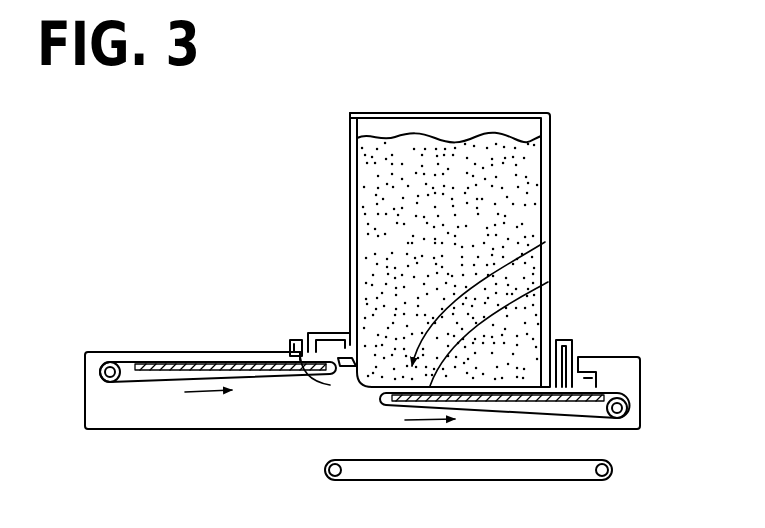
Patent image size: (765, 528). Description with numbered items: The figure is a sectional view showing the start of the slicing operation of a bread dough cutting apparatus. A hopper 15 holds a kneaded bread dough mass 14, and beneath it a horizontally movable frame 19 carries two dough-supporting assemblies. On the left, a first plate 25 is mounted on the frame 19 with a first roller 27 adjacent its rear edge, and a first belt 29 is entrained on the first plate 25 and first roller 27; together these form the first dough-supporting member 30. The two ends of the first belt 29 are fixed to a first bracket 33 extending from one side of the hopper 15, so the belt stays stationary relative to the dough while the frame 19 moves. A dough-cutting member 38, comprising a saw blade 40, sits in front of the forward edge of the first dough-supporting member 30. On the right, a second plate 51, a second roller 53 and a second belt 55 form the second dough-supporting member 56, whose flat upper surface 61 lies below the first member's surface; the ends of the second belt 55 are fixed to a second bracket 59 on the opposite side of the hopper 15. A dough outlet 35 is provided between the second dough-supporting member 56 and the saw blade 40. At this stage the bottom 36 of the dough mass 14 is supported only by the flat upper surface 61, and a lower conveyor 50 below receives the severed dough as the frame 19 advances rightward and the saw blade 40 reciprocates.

The bread dough mass 14 is at (497, 140).
The hopper 15 is at (551, 182).
The frame 19 is at (622, 357).
The first plate 25 is at (192, 357).
The first roller 27 is at (103, 360).
The first belt 29 is at (120, 356).
The first dough-supporting member 30 is at (222, 338).
The first bracket 33 is at (298, 340).
The dough outlet 35 is at (362, 390).
The bottom of the dough mass 36 is at (548, 282).
The dough-cutting member 38 is at (327, 382).
The saw blade 40 is at (338, 340).
The lower conveyor 50 is at (540, 484).
The second plate 51 is at (592, 433).
The second roller 53 is at (630, 411).
The second belt 55 is at (608, 395).
The second dough-supporting member 56 is at (545, 242).
The second bracket 59 is at (578, 338).
The flat upper surface 61 is at (510, 387).